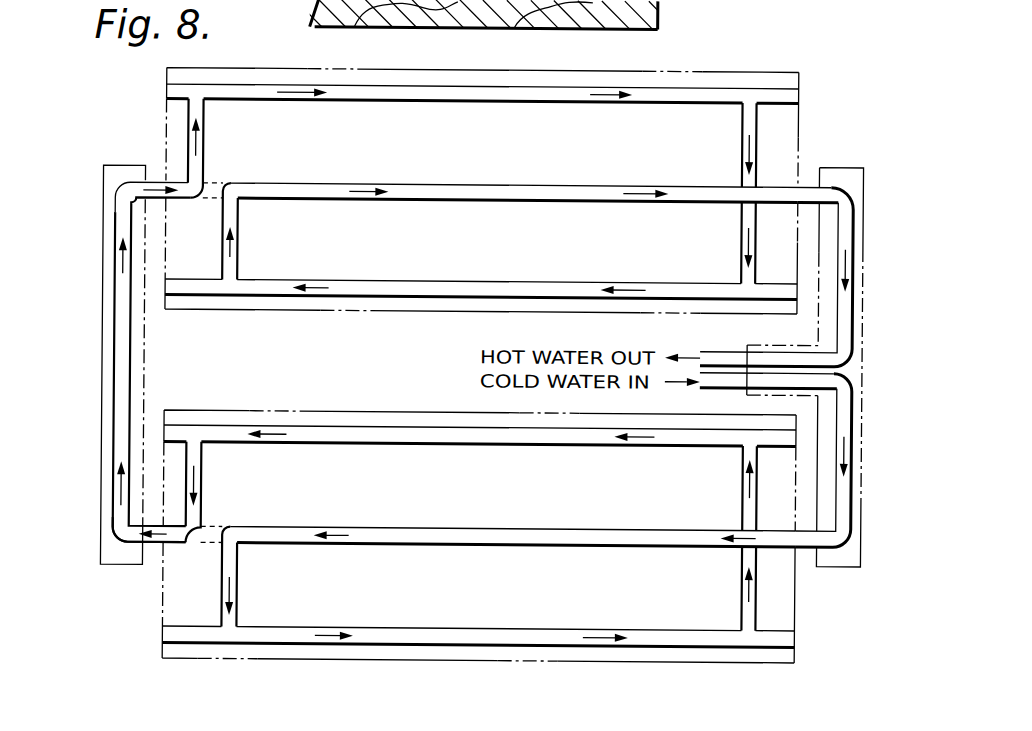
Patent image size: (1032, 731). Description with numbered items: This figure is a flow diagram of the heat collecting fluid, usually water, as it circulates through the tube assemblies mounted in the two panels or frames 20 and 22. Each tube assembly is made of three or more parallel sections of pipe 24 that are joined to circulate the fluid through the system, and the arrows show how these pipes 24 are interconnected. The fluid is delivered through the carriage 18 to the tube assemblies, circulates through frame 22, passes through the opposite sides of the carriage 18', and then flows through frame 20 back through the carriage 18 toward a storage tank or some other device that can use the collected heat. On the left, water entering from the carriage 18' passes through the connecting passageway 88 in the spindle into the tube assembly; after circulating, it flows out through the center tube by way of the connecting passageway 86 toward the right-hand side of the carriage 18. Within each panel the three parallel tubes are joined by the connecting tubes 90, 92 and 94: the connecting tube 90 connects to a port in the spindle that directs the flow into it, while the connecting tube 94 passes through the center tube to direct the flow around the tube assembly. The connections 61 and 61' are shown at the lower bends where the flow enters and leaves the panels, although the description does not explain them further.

The frame 20 is at (715, 76).
The frame 22 is at (799, 612).
The pipes 24 is at (438, 103).
The connecting tube 90 is at (201, 154).
The connecting passageway 88 is at (152, 185).
The lower bend connection 61 is at (135, 564).
The connecting tube 92 is at (237, 252).
The connecting tube 94 is at (738, 146).
The connecting passageway 86 is at (806, 180).
The cold water inlet connection 61' is at (765, 492).
The carriage 18' is at (90, 344).
The carriage 18 is at (831, 346).